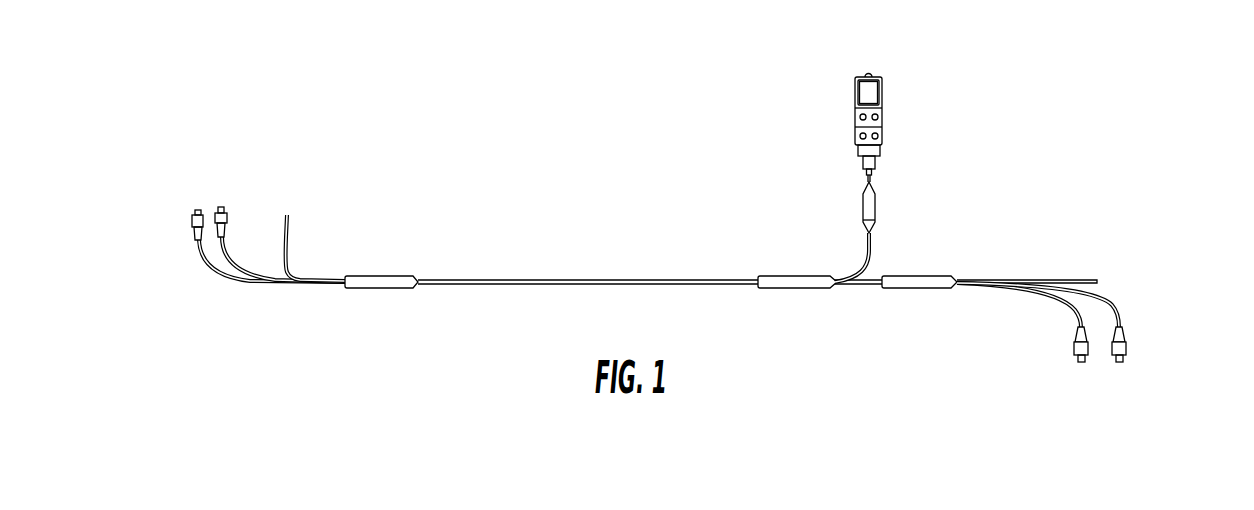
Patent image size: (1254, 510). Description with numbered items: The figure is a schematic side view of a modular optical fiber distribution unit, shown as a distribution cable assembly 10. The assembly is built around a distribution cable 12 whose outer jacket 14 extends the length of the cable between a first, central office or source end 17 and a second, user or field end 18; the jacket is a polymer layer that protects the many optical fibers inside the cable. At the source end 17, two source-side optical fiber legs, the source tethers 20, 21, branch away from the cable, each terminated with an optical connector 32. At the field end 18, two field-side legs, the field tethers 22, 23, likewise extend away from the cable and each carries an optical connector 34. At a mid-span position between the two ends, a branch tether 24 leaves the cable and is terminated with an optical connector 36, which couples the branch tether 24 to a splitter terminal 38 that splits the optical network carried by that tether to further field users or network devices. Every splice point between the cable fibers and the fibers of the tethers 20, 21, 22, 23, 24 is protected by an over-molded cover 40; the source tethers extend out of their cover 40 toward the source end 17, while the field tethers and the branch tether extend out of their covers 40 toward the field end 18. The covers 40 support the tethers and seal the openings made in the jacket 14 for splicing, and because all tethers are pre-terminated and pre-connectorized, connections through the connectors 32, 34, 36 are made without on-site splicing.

The distribution cable assembly 10 is at (1050, 103).
The cable 12 is at (650, 230).
The outer jacket 14 is at (523, 271).
The source end 17 is at (234, 184).
The field end 18 is at (1072, 271).
The source tether 20 is at (238, 268).
The source tether 21 is at (203, 270).
The field tether 22 is at (1072, 305).
The field tether 23 is at (1122, 313).
The branch tether 24 is at (870, 244).
The optical connector 32 is at (192, 220).
The optical connector 34 is at (1076, 348).
The optical connector 36 is at (866, 226).
The splitter terminal 38 is at (880, 125).
The over-molded cover 40 is at (375, 282).